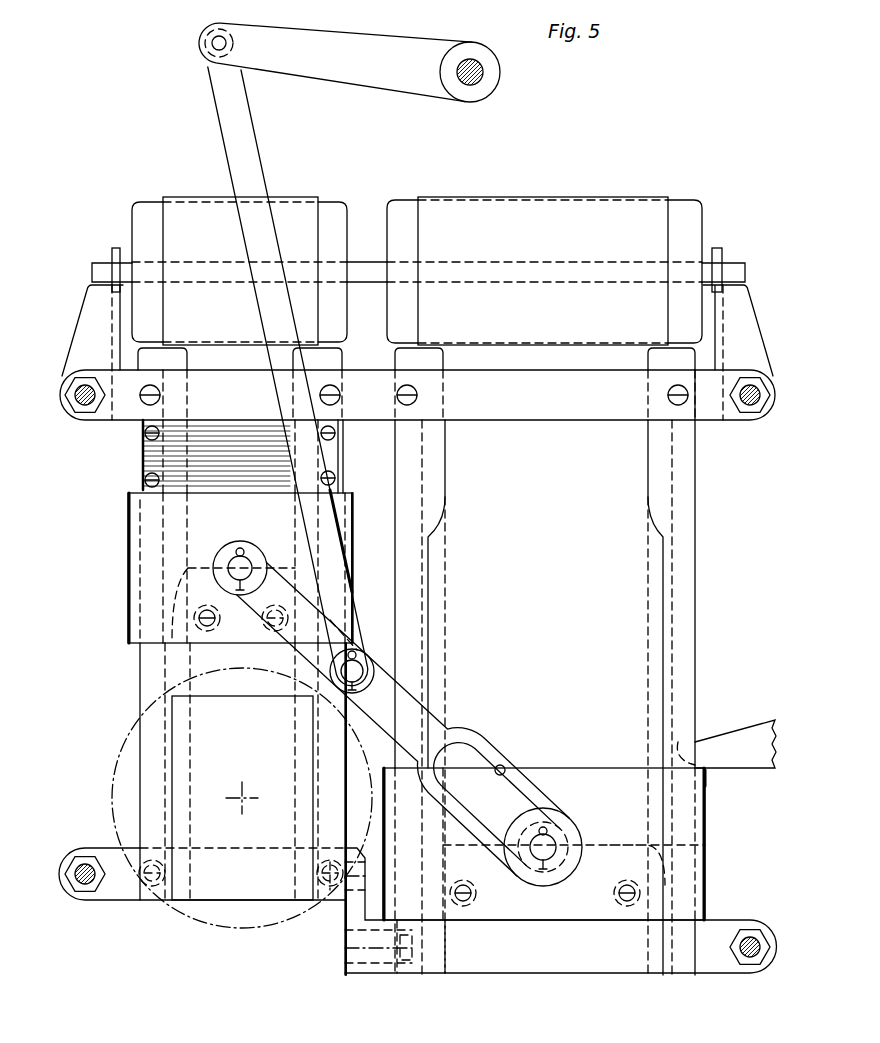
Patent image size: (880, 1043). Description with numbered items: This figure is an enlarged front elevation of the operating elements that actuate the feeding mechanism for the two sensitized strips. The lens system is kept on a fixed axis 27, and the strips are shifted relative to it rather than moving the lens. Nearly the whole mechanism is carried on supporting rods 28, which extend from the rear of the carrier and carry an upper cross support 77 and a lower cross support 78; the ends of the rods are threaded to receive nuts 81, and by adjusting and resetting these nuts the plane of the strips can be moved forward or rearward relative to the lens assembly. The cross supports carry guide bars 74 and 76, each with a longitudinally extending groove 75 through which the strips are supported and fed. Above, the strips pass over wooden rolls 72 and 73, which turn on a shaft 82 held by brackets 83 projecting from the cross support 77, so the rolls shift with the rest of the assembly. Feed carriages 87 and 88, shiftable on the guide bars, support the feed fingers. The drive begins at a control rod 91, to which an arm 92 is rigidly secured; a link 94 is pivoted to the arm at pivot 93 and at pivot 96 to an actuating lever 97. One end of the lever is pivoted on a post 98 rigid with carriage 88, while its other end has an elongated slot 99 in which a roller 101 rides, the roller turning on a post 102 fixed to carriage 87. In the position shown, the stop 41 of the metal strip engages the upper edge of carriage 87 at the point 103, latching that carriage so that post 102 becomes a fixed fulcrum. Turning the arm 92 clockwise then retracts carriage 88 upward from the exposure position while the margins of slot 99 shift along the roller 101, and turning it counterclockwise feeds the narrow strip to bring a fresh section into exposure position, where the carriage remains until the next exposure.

The axis of the lens system 27 is at (240, 797).
The supporting rods 28 is at (85, 412).
The fixed end or stop 41 is at (710, 742).
The roll 72 is at (692, 204).
The roll 73 is at (340, 200).
The guide bar 74 is at (444, 368).
The longitudinally extending groove 75 is at (432, 522).
The guide bar 76 is at (188, 366).
The upper cross support 77 is at (417, 395).
The lower cross support 78 is at (386, 968).
The nut 81 is at (68, 403).
The shaft 82 is at (735, 272).
The bracket 83 is at (88, 315).
The feed carriage 87 is at (600, 768).
The feed carriage 88 is at (128, 550).
The control rod 91 is at (483, 65).
The arm 92 is at (383, 42).
The pivot 93 is at (222, 40).
The link 94 is at (245, 132).
The pivot 96 is at (356, 662).
The actuating lever 97 is at (432, 722).
The post 98 is at (246, 566).
The elongated slot 99 is at (510, 768).
The roller 101 is at (523, 868).
The post 102 is at (562, 838).
The engagement point 103 is at (708, 780).